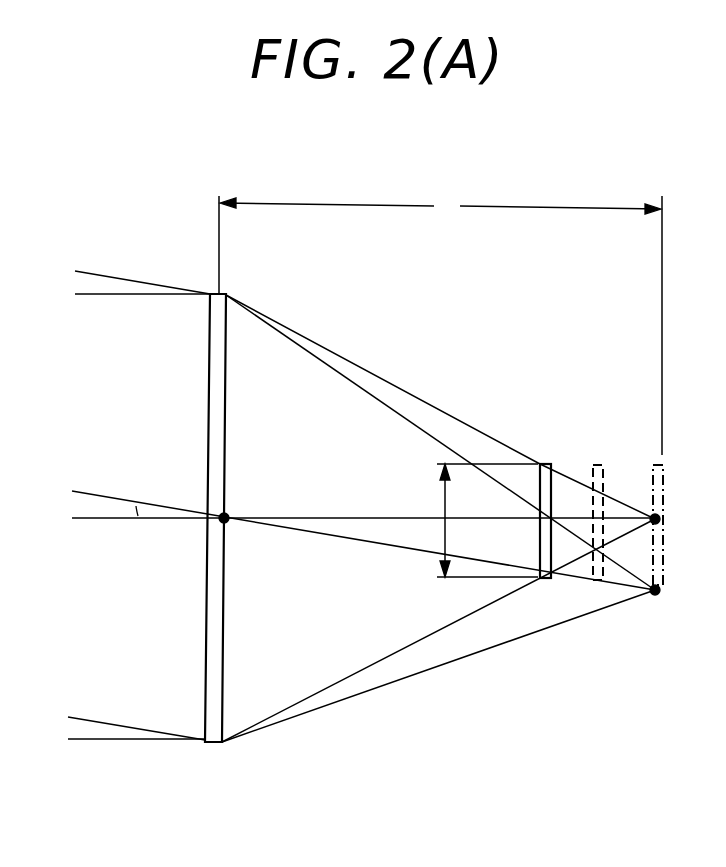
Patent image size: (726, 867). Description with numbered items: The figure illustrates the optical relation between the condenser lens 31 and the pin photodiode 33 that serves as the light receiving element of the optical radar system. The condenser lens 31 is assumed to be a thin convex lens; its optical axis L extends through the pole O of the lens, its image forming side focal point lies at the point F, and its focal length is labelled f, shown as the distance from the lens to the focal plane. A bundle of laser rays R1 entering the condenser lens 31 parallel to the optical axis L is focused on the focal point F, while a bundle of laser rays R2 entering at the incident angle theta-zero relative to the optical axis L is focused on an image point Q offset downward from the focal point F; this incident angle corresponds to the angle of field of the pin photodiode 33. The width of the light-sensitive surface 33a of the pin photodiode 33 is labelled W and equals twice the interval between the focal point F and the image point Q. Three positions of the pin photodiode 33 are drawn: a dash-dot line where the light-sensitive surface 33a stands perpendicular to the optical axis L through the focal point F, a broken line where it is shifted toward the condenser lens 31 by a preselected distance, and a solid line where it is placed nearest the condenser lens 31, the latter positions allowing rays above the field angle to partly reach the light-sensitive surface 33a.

The condenser lens 31 is at (214, 744).
The light-sensitive surface 33a is at (540, 464).
The pin photodiode 33 is at (545, 580).
The bundle of laser rays R1 is at (131, 290).
The bundle of laser rays R2 is at (378, 406).
The pole O is at (230, 512).
The optical axis L is at (104, 520).
The width of the light-sensitive surface W is at (445, 500).
The focal length f is at (440, 322).
The focal point F is at (661, 518).
The image point Q is at (661, 590).